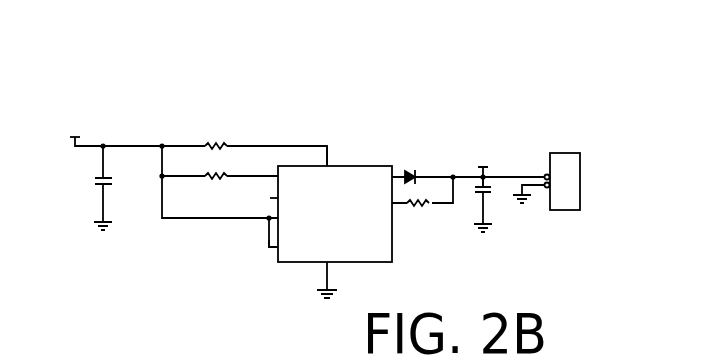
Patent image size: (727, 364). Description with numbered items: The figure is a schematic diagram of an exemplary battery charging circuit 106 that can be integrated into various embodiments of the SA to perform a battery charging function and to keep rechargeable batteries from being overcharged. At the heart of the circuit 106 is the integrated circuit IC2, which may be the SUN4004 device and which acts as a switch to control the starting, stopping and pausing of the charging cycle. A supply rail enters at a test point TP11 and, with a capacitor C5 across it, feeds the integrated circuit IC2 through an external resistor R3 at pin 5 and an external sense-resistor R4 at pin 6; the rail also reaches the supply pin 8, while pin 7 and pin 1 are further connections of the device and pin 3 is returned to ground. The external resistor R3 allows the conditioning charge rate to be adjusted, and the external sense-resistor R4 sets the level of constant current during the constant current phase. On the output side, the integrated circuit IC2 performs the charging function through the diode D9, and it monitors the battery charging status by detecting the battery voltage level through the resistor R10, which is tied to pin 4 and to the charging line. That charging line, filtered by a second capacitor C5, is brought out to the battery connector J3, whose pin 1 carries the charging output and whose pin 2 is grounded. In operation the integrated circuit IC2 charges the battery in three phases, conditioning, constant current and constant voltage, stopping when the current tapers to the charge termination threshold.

The battery charging circuit 106 is at (88, 43).
The test point TP11 is at (164, 145).
The external resistor R3 is at (219, 133).
The external sense-resistor R4 is at (219, 163).
The capacitor C5 is at (303, 189).
The integrated circuit IC2 is at (303, 191).
The diode D9 is at (412, 163).
The resistor R10 is at (419, 220).
The battery connector J3 is at (563, 167).
The pin 1 is at (416, 205).
The pin 2 is at (496, 192).
The pin 3 is at (336, 280).
The pin 4 is at (401, 195).
The pin 5 is at (335, 153).
The pin 6 is at (270, 168).
The pin 7 is at (270, 188).
The pin 8 is at (268, 208).